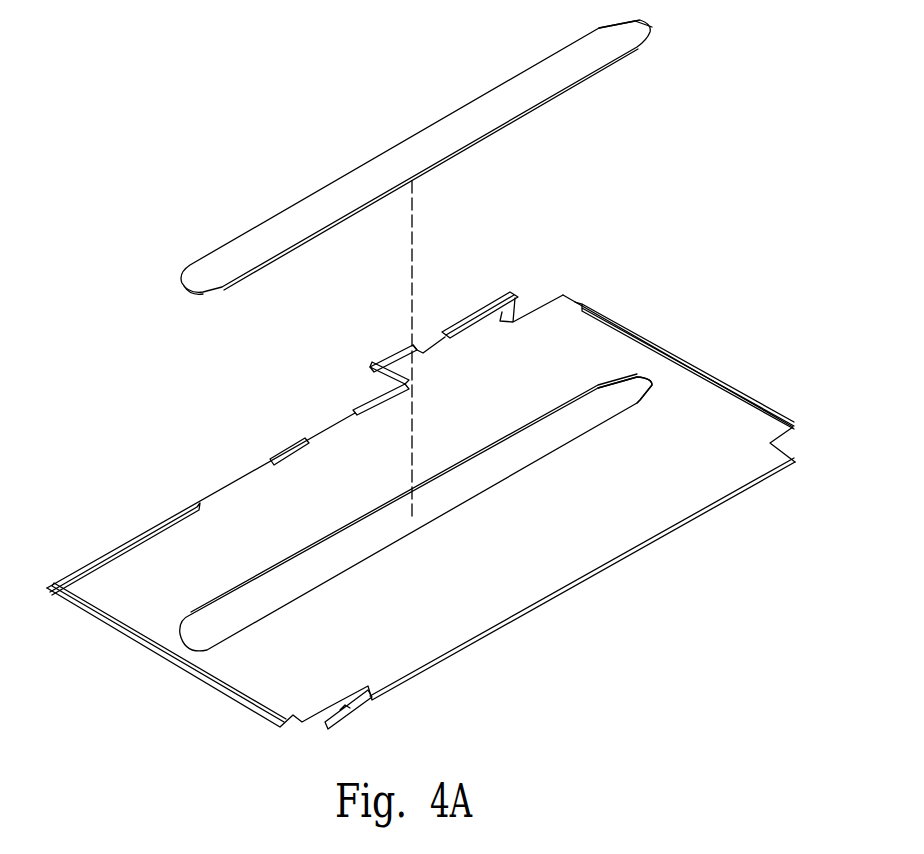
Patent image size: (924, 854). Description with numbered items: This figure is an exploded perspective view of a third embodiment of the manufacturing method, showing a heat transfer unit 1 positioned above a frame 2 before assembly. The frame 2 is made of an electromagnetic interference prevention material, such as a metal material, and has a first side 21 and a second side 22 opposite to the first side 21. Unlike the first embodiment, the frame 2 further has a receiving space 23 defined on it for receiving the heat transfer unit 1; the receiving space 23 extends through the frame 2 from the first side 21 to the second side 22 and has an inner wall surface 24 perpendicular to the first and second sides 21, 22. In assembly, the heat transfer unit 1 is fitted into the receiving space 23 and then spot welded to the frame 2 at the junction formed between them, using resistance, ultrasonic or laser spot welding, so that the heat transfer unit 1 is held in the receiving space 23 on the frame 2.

The heat transfer unit 1 is at (565, 68).
The frame 2 is at (468, 491).
The first side 21 is at (702, 418).
The second side 22 is at (707, 510).
The receiving space 23 is at (628, 392).
The inner wall surface 24 is at (587, 392).